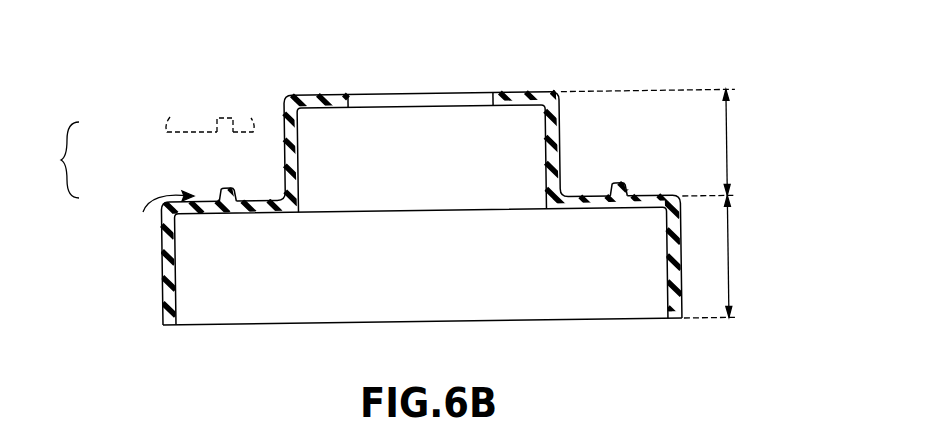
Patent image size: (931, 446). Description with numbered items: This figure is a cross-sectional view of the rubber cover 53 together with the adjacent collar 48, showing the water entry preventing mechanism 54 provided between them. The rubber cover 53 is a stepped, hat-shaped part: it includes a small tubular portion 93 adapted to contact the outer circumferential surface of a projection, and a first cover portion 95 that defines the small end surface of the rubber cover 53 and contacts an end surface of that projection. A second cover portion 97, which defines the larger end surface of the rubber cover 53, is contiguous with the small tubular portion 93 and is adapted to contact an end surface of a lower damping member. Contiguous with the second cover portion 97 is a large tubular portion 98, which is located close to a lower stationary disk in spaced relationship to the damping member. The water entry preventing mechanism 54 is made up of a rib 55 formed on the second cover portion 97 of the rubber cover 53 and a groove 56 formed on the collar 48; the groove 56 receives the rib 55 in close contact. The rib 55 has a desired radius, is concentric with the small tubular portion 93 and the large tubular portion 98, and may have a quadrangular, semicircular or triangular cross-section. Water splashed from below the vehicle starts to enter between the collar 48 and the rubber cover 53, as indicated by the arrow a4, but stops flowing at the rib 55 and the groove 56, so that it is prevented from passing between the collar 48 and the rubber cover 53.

The collar 48 is at (166, 122).
The rubber cover 53 is at (291, 96).
The water entry preventing mechanism 54 is at (54, 160).
The rib 55 is at (230, 188).
The groove 56 is at (222, 127).
The small tubular portion 93 is at (728, 146).
The first cover portion 95 is at (519, 92).
The second cover portion 97 is at (586, 197).
The large tubular portion 98 is at (728, 257).
The arrow a4 is at (151, 211).